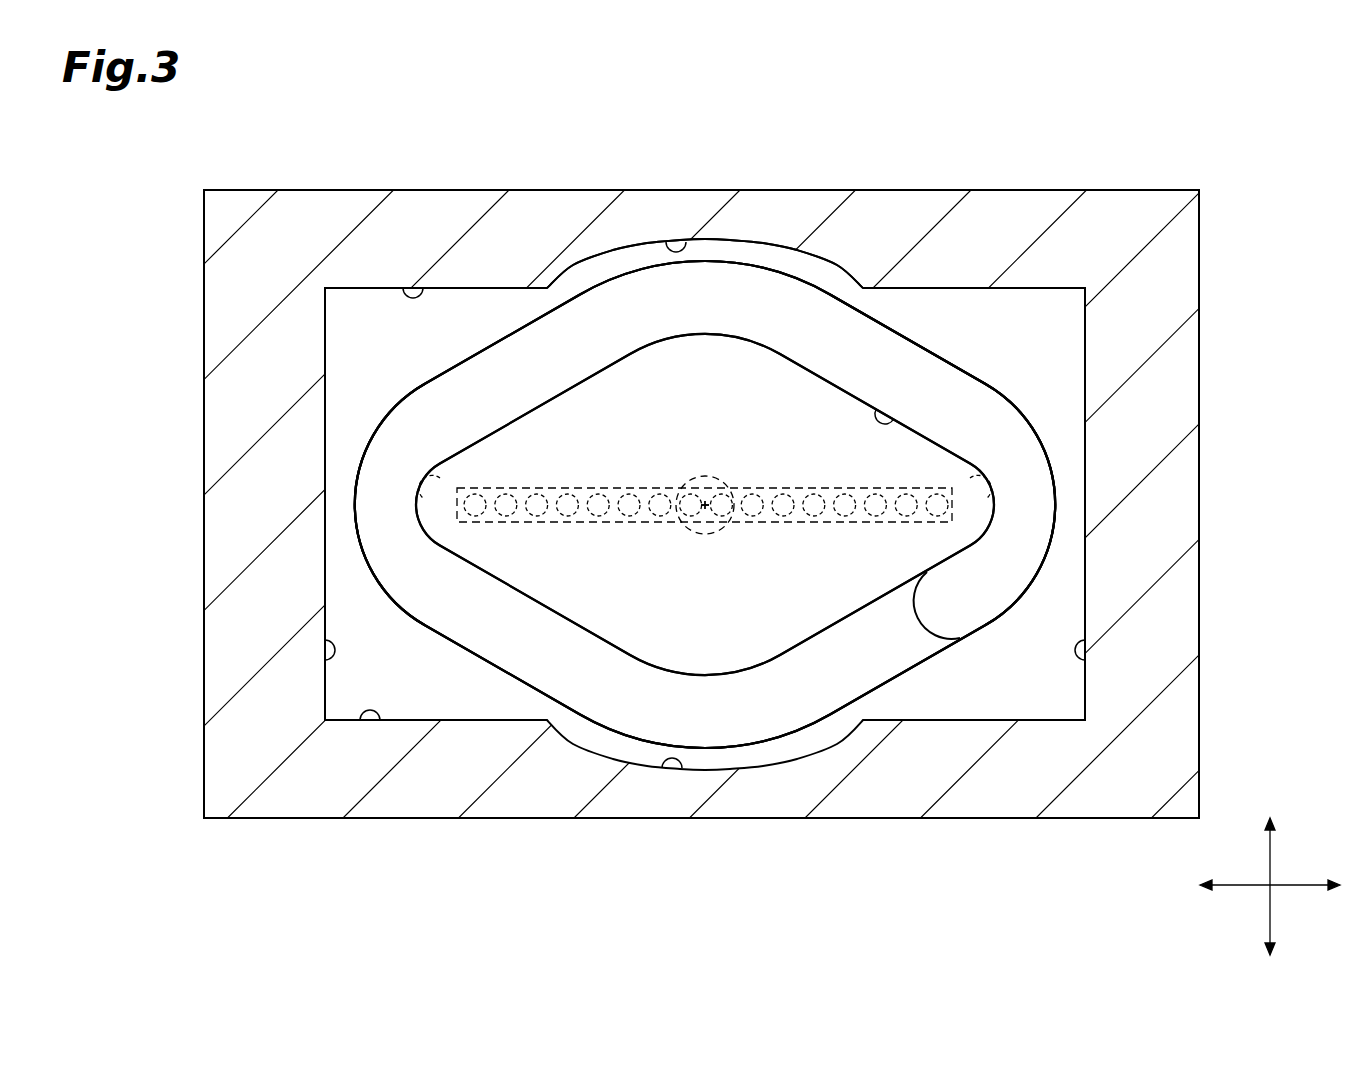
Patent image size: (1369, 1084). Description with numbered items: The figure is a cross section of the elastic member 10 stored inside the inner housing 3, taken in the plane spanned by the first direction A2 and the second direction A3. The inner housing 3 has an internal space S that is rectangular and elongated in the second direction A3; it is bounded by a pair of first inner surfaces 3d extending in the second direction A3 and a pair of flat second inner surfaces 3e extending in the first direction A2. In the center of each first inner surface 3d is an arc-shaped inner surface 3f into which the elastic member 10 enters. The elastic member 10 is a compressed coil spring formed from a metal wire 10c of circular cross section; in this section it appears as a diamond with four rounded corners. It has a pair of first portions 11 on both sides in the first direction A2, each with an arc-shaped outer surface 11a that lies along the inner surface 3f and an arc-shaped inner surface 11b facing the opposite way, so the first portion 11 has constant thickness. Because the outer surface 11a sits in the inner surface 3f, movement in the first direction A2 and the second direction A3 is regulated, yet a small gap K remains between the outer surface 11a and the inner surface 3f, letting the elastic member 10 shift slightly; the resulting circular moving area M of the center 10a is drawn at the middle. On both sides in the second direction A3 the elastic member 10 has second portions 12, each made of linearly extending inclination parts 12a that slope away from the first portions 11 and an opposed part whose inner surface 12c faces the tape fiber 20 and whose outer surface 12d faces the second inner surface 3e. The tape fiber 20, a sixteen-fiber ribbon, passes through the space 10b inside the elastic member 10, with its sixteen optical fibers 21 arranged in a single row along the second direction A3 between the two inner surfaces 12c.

The inner housing 3 is at (946, 188).
The first inner surface 3d is at (413, 280).
The second inner surface 3e is at (323, 650).
The inner surface 3f is at (670, 236).
The elastic member 10 is at (918, 345).
The center 10a is at (706, 502).
The space 10b is at (895, 418).
The wire 10c is at (947, 378).
The first portion 11 is at (705, 294).
The outer surface 11a is at (648, 266).
The inner surface 11b is at (688, 335).
The second portion 12 is at (380, 504).
The inclination part 12a is at (470, 352).
The inner surface 12c is at (433, 455).
The outer surface 12d is at (357, 481).
The gap K is at (767, 250).
The internal space S is at (1058, 590).
The moving area M is at (728, 528).
The tape fiber 20 is at (578, 487).
The optical fiber 21 is at (572, 522).
The first direction A2 is at (1273, 858).
The second direction A3 is at (1268, 900).